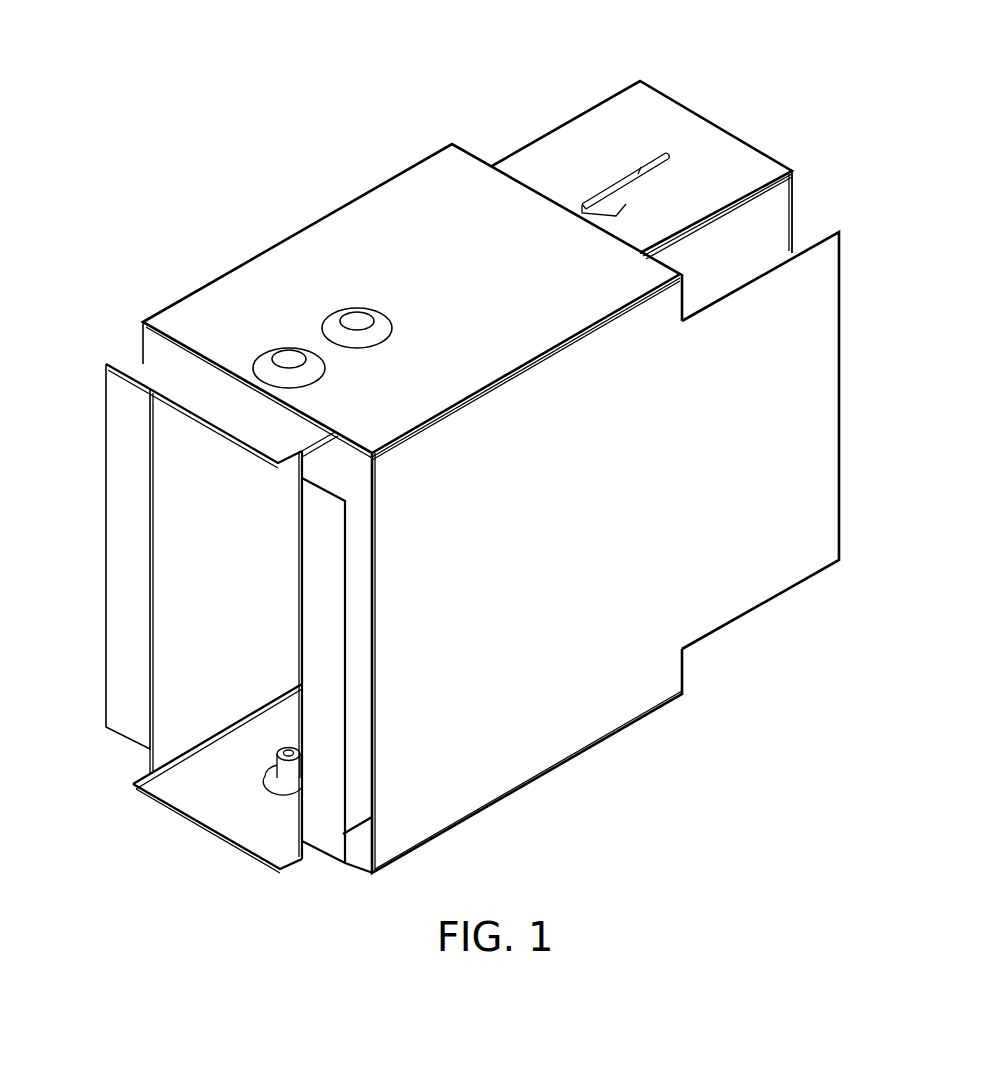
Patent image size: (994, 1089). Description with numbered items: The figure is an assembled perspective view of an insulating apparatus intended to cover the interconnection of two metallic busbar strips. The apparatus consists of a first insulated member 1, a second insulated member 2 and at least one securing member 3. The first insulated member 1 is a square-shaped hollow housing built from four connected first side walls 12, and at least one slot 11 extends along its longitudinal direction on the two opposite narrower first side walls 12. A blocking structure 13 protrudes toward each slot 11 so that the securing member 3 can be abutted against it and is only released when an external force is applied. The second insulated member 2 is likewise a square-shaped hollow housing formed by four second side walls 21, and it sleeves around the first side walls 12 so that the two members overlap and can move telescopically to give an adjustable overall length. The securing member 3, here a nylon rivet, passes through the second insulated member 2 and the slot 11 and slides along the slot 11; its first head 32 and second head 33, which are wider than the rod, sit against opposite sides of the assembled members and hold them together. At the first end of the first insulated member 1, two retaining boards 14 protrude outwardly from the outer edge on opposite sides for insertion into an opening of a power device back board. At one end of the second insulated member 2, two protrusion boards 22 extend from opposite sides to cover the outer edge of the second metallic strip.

The first insulated member 1 is at (678, 134).
The slot 11 is at (622, 173).
The first side wall 12 is at (745, 158).
The blocking structure 13 is at (615, 212).
The second insulated member 2 is at (521, 487).
The second side wall 21 is at (407, 193).
The protrusion board 22 is at (810, 403).
The retaining board 14 is at (123, 553).
The securing member 3 is at (264, 537).
The first head 32 is at (268, 779).
The second head 33 is at (287, 355).